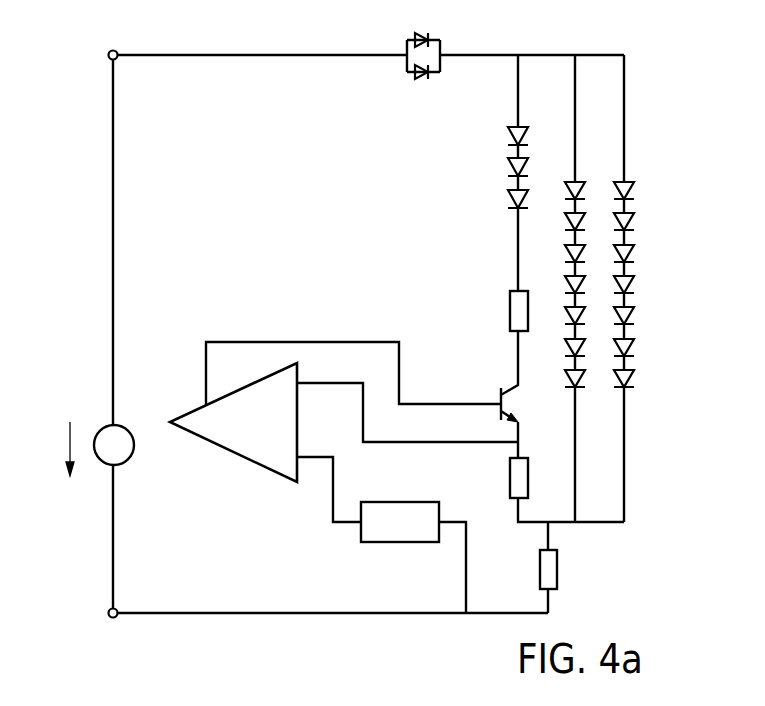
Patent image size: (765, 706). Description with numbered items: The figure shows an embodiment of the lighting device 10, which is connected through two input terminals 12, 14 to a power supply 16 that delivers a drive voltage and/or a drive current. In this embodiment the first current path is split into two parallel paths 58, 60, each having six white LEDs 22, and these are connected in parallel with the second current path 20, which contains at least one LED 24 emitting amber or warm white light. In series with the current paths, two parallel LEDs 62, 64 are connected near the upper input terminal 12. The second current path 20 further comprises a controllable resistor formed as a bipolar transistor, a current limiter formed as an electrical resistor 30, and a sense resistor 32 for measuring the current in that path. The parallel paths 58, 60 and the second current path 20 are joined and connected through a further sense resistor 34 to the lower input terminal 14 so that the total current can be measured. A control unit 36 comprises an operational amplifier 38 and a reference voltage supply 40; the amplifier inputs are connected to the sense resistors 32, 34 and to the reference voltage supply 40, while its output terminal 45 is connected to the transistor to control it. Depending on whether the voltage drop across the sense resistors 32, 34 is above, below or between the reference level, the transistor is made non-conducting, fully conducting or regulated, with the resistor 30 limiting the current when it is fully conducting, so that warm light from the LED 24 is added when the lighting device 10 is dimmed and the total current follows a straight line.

The lighting device 10 is at (672, 58).
The input terminal 12 is at (109, 59).
The input terminal 14 is at (109, 618).
The power supply 16 is at (108, 465).
The second current path 20 is at (516, 80).
The LEDs 22 is at (570, 378).
The LED 24 is at (508, 194).
The current limiter 30 is at (509, 309).
The sense resistor 32 is at (509, 483).
The sense resistor 34 is at (559, 569).
The control unit 36 is at (240, 510).
The operational amplifier 38 is at (212, 455).
The reference voltage supply 40 is at (405, 544).
The output terminal 45 is at (330, 340).
The parallel path 58 is at (626, 104).
The parallel path 60 is at (577, 83).
The LED 62 is at (412, 31).
The LED 64 is at (413, 76).